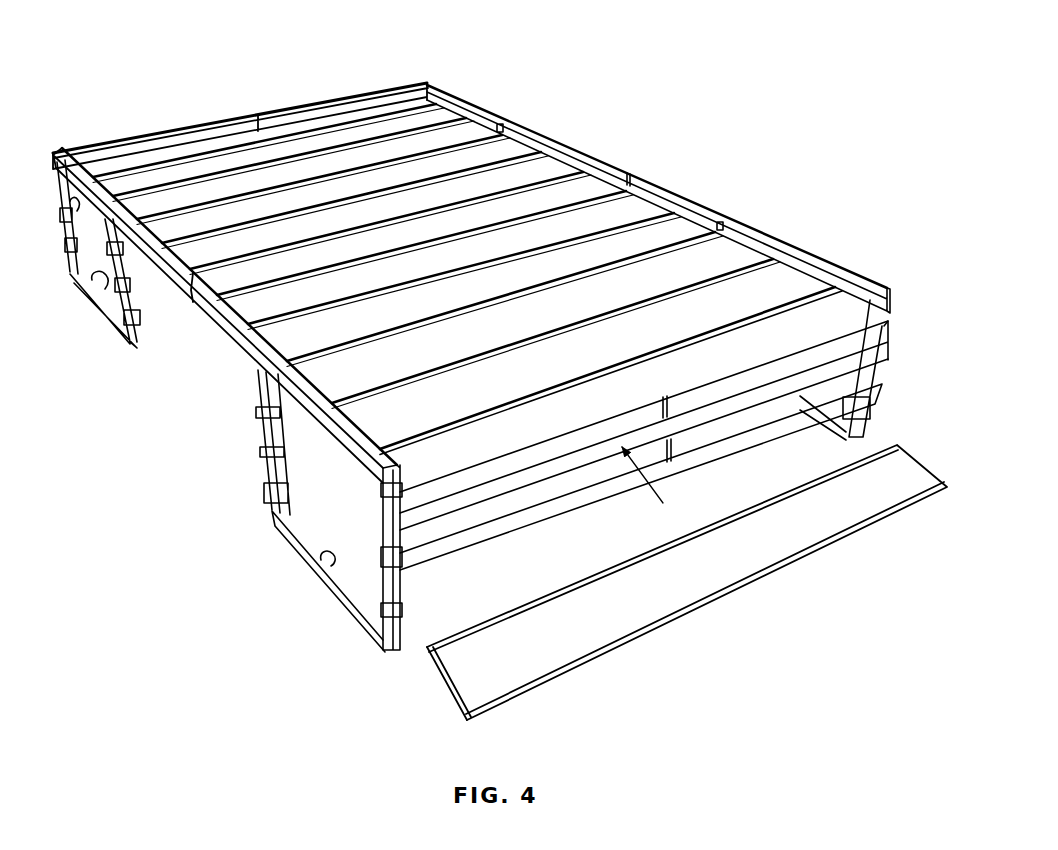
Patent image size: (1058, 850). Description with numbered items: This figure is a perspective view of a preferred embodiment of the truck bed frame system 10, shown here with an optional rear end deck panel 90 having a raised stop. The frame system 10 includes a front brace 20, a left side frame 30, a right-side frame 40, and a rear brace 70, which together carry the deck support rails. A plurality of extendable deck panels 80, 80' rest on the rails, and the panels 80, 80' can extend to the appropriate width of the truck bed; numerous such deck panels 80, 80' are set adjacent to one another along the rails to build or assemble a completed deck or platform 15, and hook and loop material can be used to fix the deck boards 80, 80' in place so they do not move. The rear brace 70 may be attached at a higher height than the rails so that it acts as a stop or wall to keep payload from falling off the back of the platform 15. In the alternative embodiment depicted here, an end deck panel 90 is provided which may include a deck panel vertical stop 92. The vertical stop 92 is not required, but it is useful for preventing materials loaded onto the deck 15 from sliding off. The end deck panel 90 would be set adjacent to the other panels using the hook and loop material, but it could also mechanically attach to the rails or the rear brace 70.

The truck bed frame system 10 is at (680, 66).
The platform 15 is at (340, 204).
The front brace 20 is at (287, 104).
The left side frame 30 is at (64, 153).
The right-side frame 40 is at (572, 141).
The rear brace 70 is at (756, 434).
The deck panel 80 is at (634, 355).
The deck panel 80' is at (575, 283).
The end deck panel 90 is at (898, 466).
The deck panel vertical stop 92 is at (469, 722).